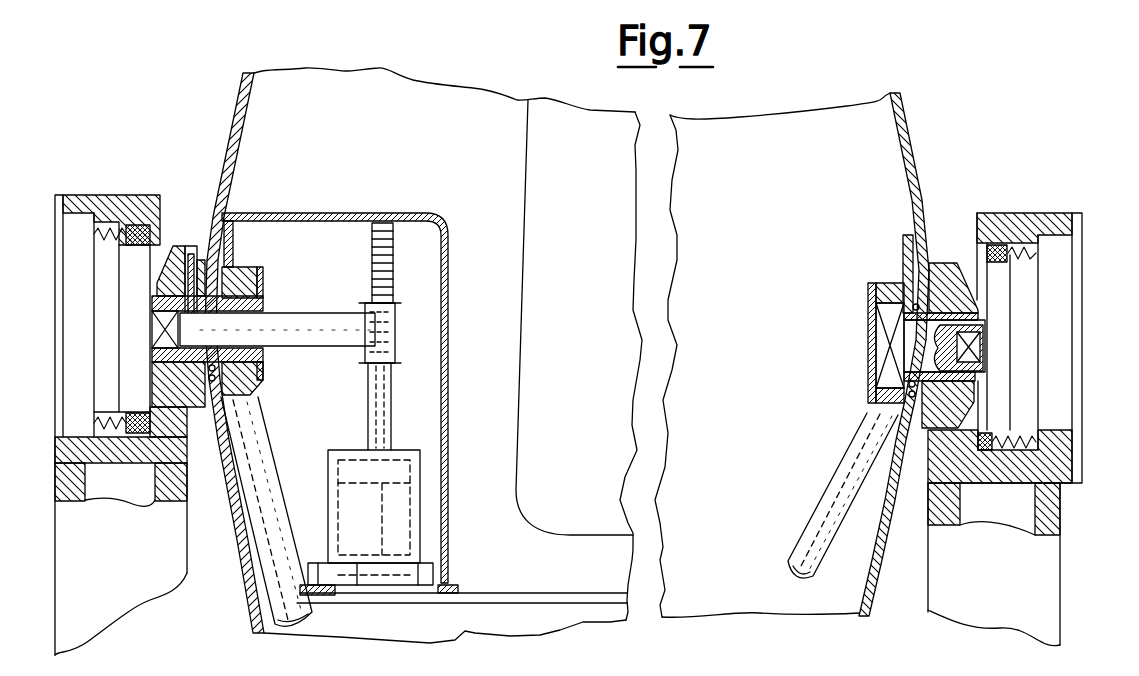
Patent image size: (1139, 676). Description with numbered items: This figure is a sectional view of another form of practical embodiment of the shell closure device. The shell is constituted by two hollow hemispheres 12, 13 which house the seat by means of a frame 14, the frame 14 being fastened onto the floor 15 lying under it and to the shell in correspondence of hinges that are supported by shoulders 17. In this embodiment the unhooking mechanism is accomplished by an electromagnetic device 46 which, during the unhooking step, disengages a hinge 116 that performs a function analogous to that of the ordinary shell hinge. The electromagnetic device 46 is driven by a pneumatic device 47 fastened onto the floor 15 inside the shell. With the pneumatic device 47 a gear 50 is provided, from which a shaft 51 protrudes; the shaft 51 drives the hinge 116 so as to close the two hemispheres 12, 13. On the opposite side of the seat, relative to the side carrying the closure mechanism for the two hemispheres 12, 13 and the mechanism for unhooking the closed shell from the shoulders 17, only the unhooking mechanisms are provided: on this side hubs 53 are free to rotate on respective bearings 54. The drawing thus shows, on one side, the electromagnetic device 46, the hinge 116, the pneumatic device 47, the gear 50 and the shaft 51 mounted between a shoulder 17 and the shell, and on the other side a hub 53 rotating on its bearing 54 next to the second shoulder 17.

The hollow hemisphere 12 is at (905, 124).
The hollow hemisphere 13 is at (877, 584).
The frame 14 is at (312, 612).
The floor 15 is at (489, 592).
The shoulder 17 is at (146, 597).
The electromagnetic device 46 is at (88, 262).
The pneumatic device 47 is at (328, 492).
The gear 50 is at (396, 318).
The shaft 51 is at (306, 326).
The hub 53 is at (918, 347).
The bearing 54 is at (882, 323).
The hinge 116 is at (190, 242).